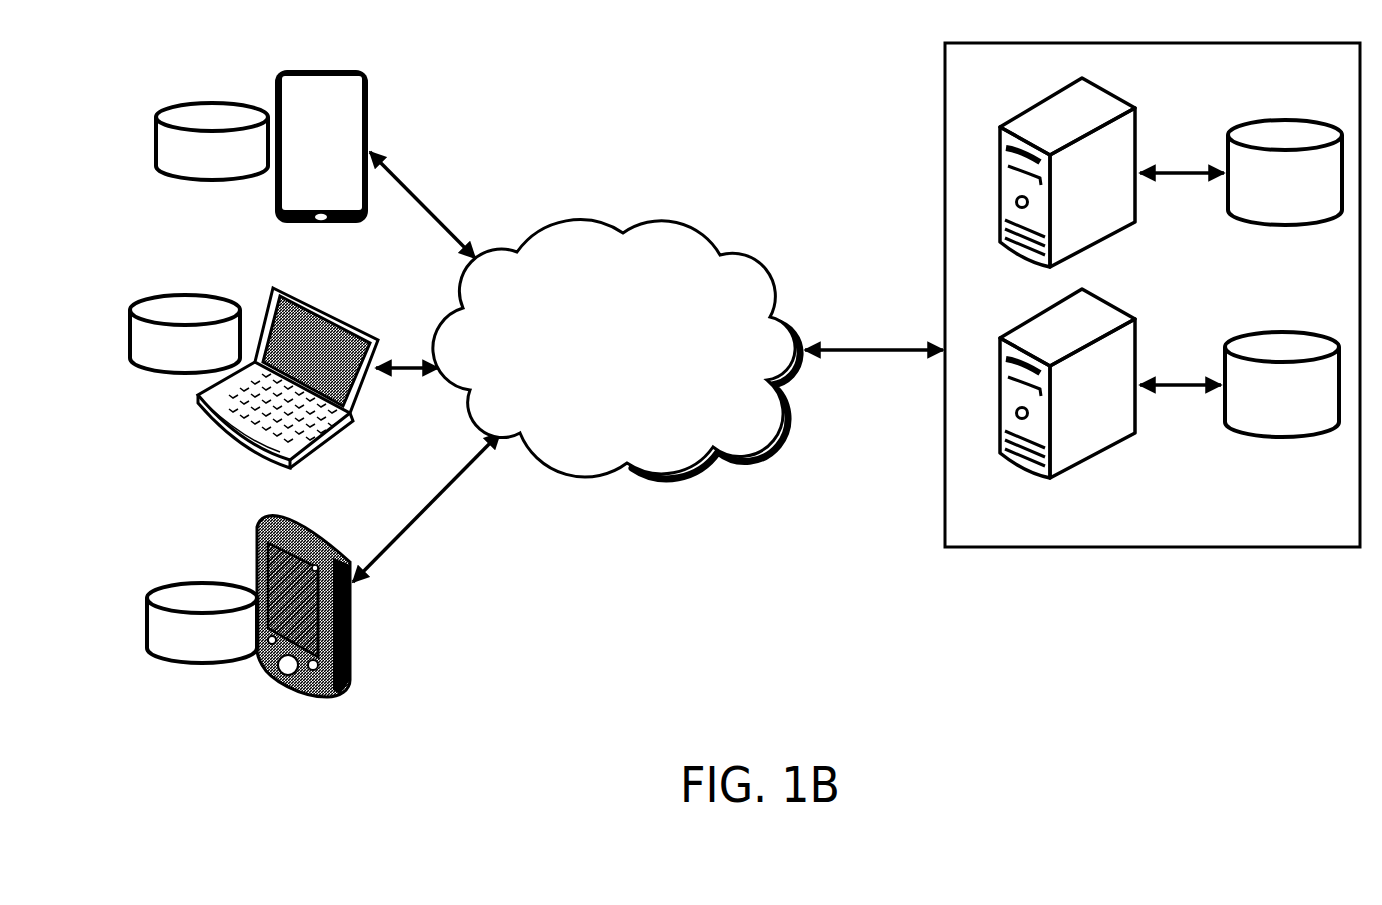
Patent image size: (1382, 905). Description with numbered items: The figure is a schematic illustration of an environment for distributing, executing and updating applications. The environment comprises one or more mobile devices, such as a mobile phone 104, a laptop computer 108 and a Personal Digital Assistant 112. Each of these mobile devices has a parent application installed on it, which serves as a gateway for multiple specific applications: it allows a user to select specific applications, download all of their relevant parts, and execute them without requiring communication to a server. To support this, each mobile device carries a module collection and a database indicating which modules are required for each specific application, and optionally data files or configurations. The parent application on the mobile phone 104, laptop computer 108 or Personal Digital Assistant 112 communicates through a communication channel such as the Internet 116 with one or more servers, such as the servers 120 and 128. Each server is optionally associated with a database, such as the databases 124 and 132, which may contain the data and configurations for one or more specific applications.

The mobile phone 104 is at (368, 114).
The laptop computer 108 is at (350, 322).
The Personal Digital Assistant 112 is at (328, 540).
The Internet 116 is at (695, 221).
The server 120 is at (1110, 97).
The database 124 is at (1303, 117).
The server 128 is at (1110, 305).
The database 132 is at (1303, 329).